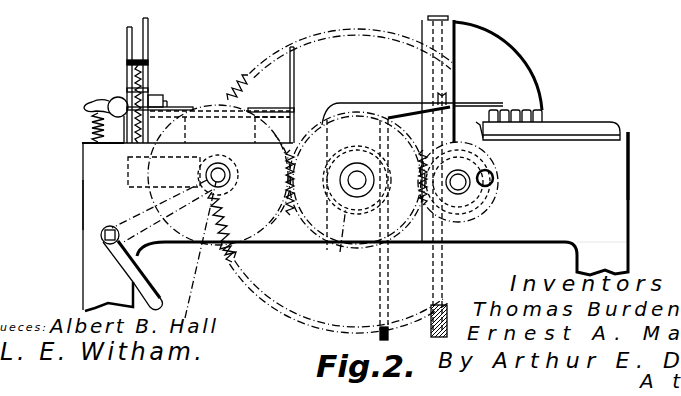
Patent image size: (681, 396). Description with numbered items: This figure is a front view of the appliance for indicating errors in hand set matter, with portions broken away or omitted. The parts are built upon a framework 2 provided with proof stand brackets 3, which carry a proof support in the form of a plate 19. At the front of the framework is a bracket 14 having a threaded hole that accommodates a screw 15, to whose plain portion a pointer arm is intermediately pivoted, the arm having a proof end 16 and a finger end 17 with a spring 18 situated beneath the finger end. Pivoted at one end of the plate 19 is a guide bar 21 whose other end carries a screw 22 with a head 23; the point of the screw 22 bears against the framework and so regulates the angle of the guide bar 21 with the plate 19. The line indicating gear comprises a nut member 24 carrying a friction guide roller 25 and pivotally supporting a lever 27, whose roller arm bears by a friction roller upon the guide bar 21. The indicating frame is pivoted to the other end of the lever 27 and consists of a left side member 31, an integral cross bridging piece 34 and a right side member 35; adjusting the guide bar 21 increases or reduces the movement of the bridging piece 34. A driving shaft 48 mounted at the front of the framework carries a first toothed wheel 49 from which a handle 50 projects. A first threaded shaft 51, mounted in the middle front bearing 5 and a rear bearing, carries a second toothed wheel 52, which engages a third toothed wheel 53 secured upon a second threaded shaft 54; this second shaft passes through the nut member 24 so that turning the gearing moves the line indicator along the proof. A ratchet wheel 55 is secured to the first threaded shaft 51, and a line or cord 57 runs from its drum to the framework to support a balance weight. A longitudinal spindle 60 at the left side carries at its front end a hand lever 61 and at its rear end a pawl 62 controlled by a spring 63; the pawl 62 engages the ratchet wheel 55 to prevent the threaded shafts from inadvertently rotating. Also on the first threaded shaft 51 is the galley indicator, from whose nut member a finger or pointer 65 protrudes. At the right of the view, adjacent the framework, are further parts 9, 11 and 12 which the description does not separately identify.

The framework 2 is at (578, 212).
The proof stand brackets 3 is at (303, 112).
The middle front bearing 5 is at (338, 237).
The standard 9 is at (482, 135).
The keys 11 is at (578, 137).
The keyboard plate 12 is at (545, 130).
The bracket 14 is at (118, 128).
The screw 15 is at (108, 103).
The proof end 16 is at (157, 140).
The finger end 17 is at (84, 108).
The spring 18 is at (107, 135).
The plate 19 is at (270, 103).
The guide bar 21 is at (150, 90).
The screw 22 is at (137, 72).
The head 23 is at (147, 64).
The nut member 24 is at (218, 236).
The friction guide roller 25 is at (169, 91).
The lever 27 is at (127, 31).
The left side member 31 is at (146, 22).
The cross bridging piece 34 is at (279, 97).
The right side member 35 is at (295, 68).
The driving shaft 48 is at (487, 190).
The first toothed wheel 49 is at (462, 196).
The handle 50 is at (494, 178).
The first threaded shaft 51 is at (357, 180).
The second toothed wheel 52 is at (358, 180).
The third toothed wheel 53 is at (221, 175).
The second threaded shaft 54 is at (318, 198).
The ratchet wheel 55 is at (342, 181).
The line or cord 57 is at (340, 130).
The longitudinal spindle 60 is at (102, 230).
The hand lever 61 is at (125, 258).
The pawl 62 is at (83, 199).
The spring 63 is at (145, 183).
The finger or pointer 65 is at (486, 91).